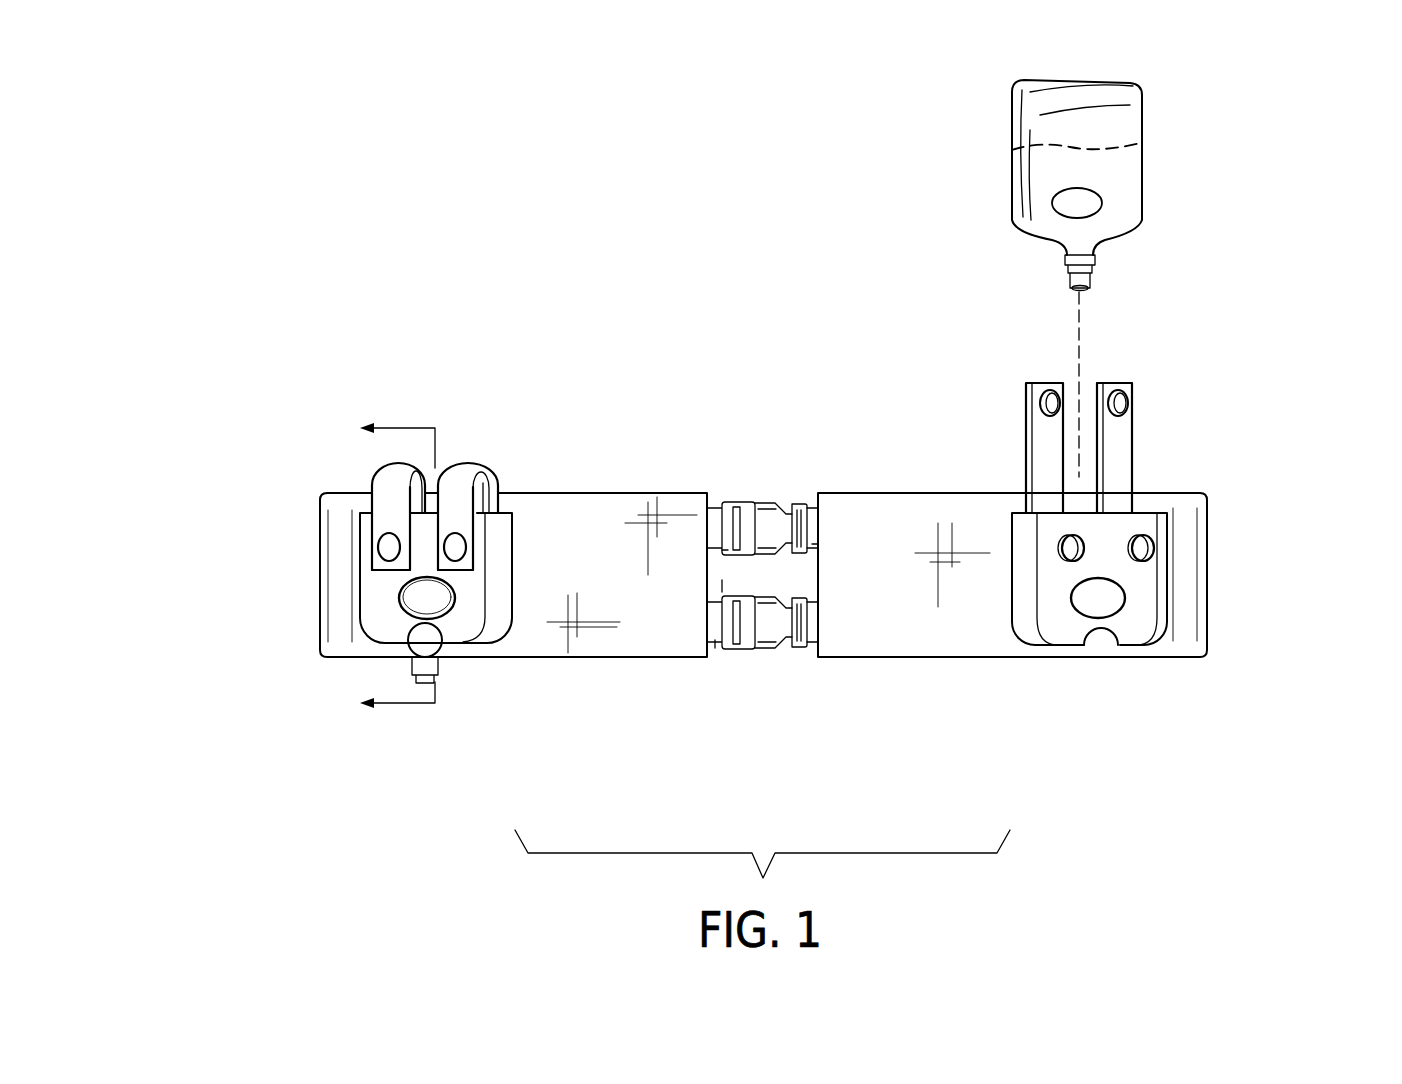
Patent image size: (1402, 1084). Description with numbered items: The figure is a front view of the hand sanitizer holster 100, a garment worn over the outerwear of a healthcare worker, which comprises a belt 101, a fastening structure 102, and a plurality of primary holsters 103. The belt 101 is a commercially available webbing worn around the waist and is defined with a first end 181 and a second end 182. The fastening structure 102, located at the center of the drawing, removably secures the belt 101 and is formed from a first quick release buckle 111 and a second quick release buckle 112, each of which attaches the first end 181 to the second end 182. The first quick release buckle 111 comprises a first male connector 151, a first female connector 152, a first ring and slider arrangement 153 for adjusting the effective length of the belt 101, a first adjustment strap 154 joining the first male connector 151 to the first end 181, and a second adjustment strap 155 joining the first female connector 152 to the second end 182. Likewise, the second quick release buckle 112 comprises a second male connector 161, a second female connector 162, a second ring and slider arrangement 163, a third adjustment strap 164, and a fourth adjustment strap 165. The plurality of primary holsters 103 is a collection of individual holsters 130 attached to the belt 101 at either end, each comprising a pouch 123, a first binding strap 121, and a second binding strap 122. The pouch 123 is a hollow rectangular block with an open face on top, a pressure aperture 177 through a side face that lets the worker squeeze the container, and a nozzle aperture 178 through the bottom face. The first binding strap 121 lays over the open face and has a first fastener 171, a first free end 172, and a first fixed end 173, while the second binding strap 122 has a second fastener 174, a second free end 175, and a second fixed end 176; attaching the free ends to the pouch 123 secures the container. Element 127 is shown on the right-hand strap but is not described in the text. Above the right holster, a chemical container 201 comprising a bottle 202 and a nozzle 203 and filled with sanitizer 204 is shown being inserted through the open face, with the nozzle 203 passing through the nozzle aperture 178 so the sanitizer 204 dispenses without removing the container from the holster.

The hand sanitizer holster 100 is at (272, 155).
The belt 101 is at (607, 493).
The fastening structure 102 is at (764, 503).
The plurality of primary holsters 103 is at (517, 492).
The first quick release buckle 111 is at (778, 500).
The second quick release buckle 112 is at (768, 645).
The first binding strap 121 is at (387, 470).
The second binding strap 122 is at (463, 478).
The pouch 123 is at (503, 582).
The upright prong 127 is at (1047, 400).
The individual holster 130 is at (372, 480).
The first male connector 151 is at (760, 505).
The first female connector 152 is at (785, 505).
The first ring and slider arrangement 153 is at (722, 586).
The first adjustment strap 154 is at (713, 530).
The second adjustment strap 155 is at (810, 505).
The second male connector 161 is at (773, 598).
The second female connector 162 is at (790, 645).
The second ring and slider arrangement 163 is at (717, 597).
The third adjustment strap 164 is at (720, 645).
The fourth adjustment strap 165 is at (827, 640).
The first fastener 171 is at (1062, 548).
The first free end 172 is at (1080, 318).
The first fixed end 173 is at (1045, 512).
The second fastener 174 is at (1122, 403).
The second free end 175 is at (1130, 385).
The second fixed end 176 is at (1122, 510).
The pressure aperture 177 is at (393, 586).
The nozzle aperture 178 is at (410, 637).
The first end 181 is at (730, 560).
The second end 182 is at (818, 537).
The chemical container 201 is at (427, 488).
The bottle 202 is at (415, 603).
The nozzle 203 is at (435, 665).
The sanitizer 204 is at (1117, 148).